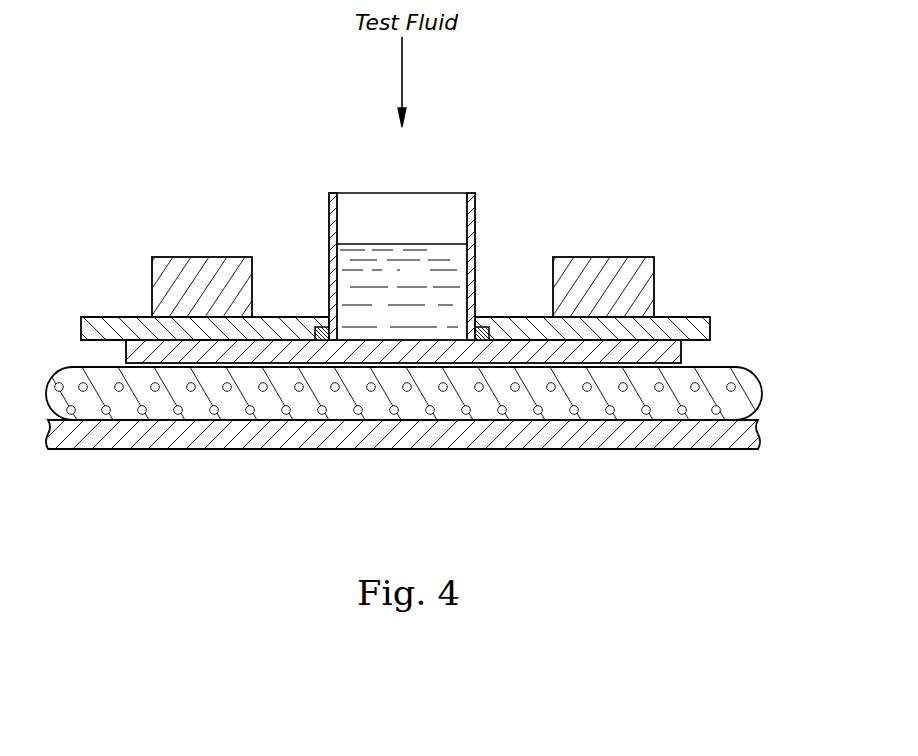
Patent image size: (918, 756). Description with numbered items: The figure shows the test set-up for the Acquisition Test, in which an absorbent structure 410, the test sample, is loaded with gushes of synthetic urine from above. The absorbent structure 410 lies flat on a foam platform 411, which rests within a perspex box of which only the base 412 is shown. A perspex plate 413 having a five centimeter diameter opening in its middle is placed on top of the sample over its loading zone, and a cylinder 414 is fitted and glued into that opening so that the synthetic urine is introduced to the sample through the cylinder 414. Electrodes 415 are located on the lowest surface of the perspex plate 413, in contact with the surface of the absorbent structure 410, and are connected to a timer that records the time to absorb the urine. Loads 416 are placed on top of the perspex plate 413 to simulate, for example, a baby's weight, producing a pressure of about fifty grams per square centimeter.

The absorbent structure 410 is at (668, 352).
The foam platform 411 is at (740, 388).
The base of perspex box 412 is at (668, 433).
The perspex plate 413 is at (686, 322).
The cylinder 414 is at (472, 232).
The electrodes 415 is at (307, 323).
The loads 416 is at (596, 265).